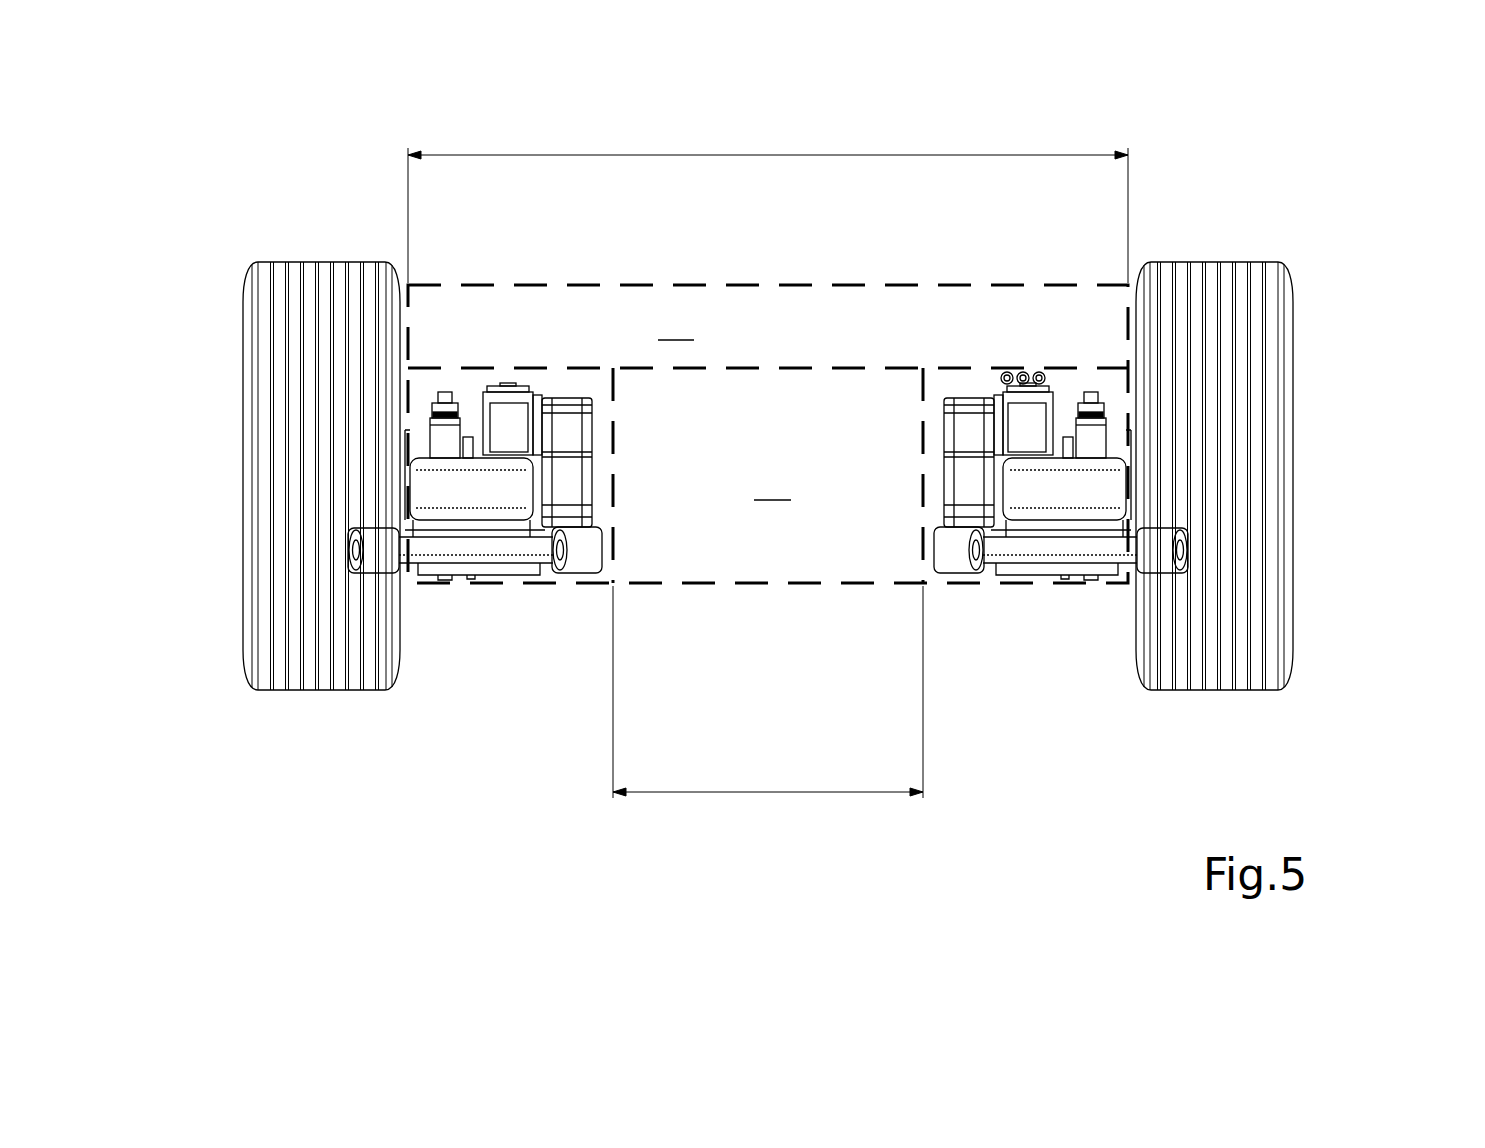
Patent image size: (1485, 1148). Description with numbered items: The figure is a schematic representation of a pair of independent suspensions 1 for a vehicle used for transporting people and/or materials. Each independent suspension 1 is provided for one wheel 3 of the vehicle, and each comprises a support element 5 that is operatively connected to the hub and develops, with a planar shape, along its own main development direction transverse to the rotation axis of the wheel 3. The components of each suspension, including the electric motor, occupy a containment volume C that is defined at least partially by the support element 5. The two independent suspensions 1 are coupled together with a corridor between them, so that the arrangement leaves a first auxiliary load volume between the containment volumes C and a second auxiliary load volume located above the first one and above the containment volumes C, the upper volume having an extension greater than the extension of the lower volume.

The independent suspension 1 is at (783, 466).
The wheel 3 is at (292, 283).
The support element 5 is at (428, 583).
The containment volume C is at (525, 572).